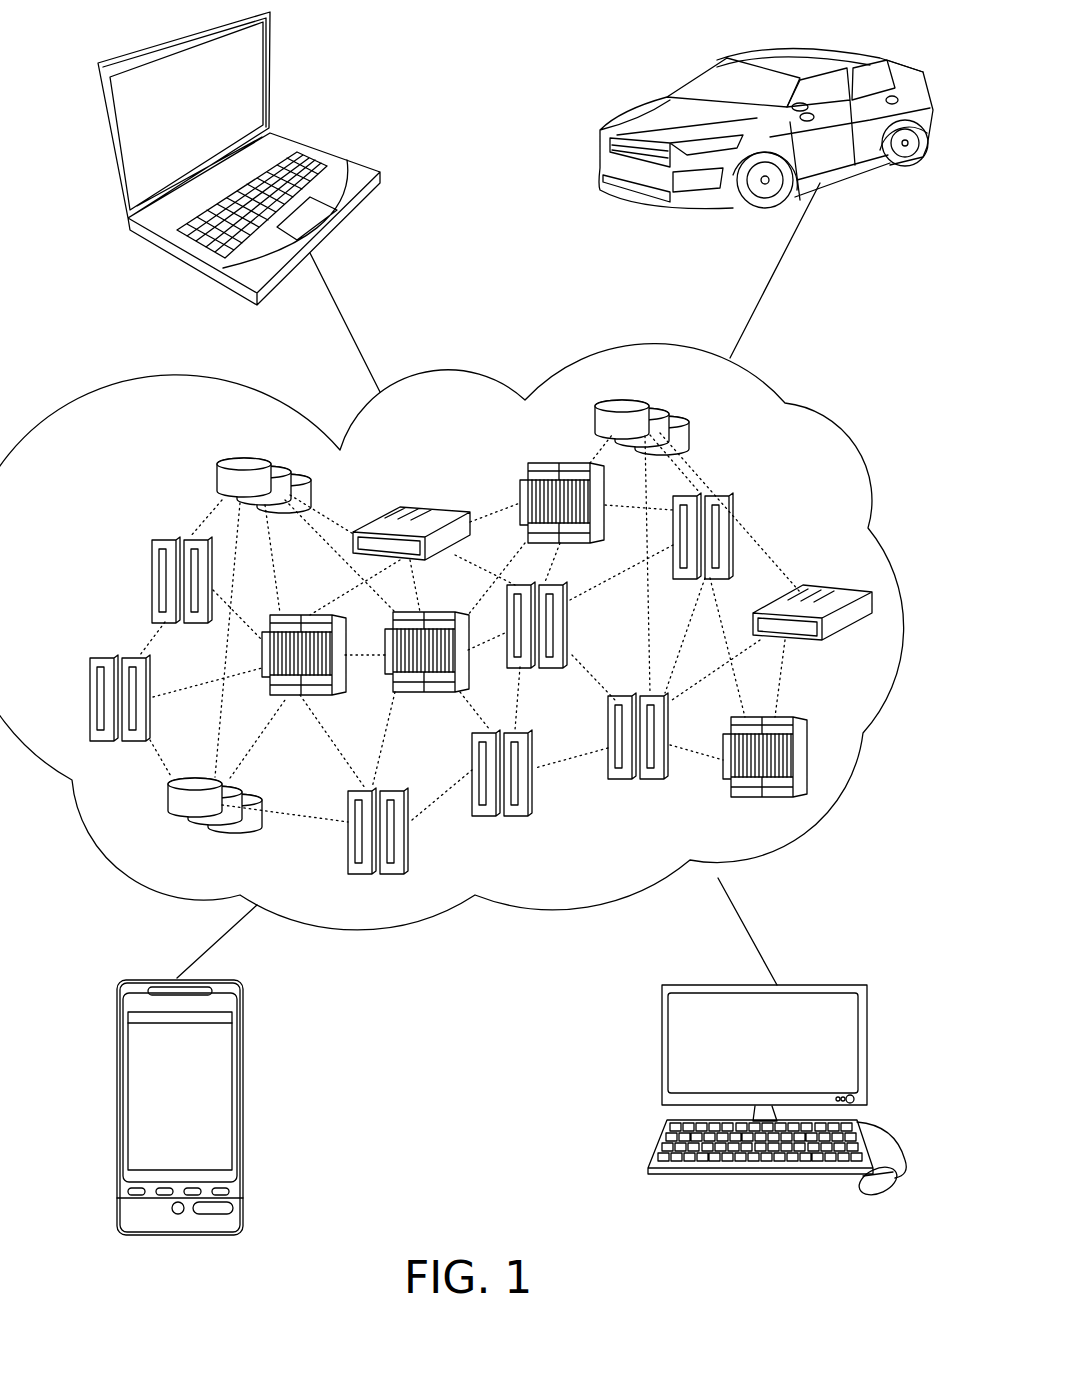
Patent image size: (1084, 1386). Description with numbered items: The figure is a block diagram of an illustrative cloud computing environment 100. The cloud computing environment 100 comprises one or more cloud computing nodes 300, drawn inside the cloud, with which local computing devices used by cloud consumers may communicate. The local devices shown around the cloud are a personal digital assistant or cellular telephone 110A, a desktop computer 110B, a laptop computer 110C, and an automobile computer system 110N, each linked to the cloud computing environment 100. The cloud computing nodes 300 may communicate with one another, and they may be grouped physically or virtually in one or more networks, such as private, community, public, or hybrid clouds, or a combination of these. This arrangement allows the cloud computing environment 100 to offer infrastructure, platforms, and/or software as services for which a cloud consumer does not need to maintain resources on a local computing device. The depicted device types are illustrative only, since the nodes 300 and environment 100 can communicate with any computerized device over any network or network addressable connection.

The cloud computing environment 100 is at (847, 412).
The personal digital assistant or cellular telephone 110A is at (242, 1008).
The desktop computer 110B is at (867, 1005).
The laptop computer 110C is at (335, 157).
The automobile computer system 110N is at (880, 62).
The cloud computing nodes 300 is at (838, 577).